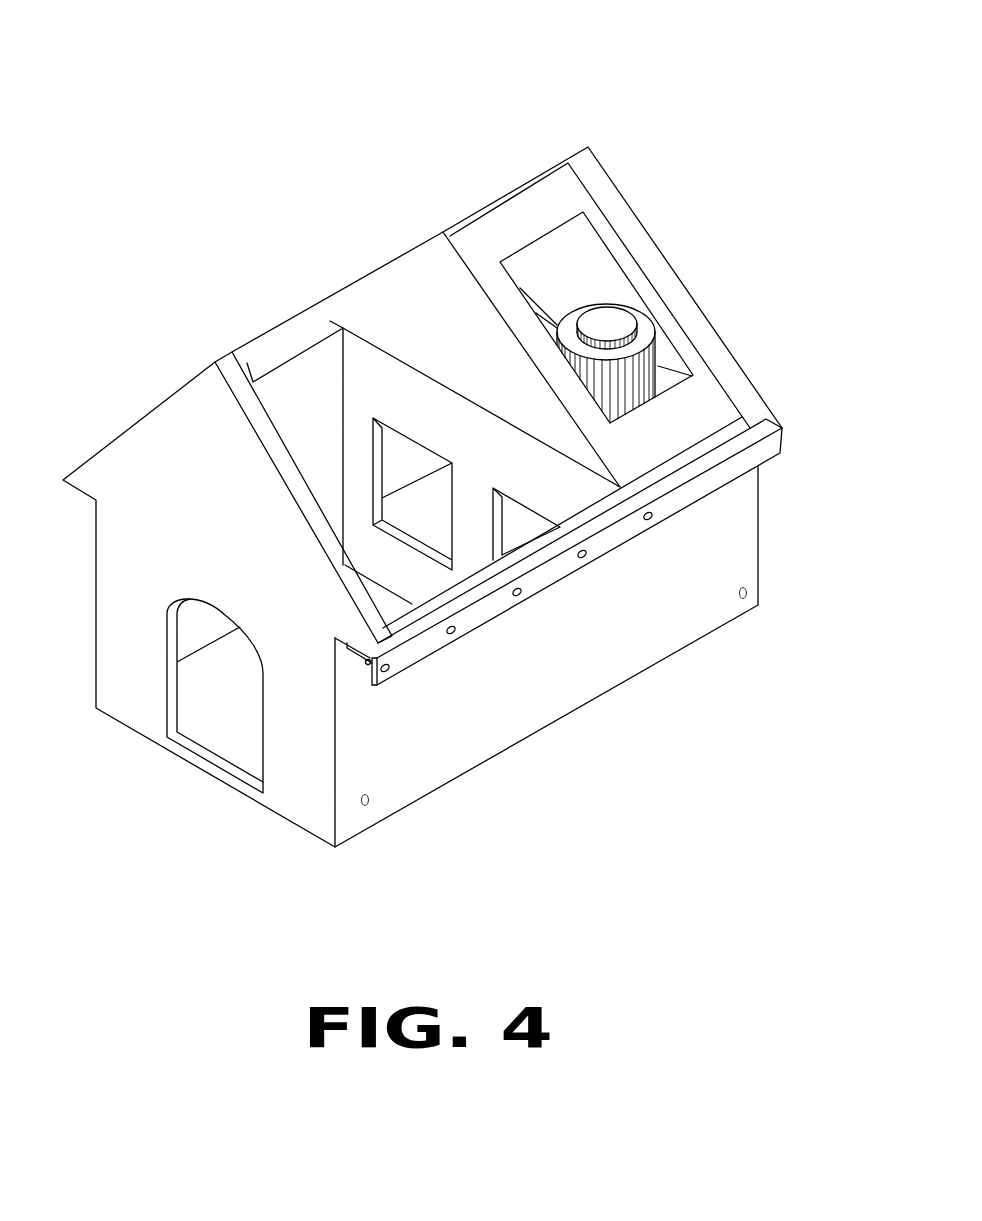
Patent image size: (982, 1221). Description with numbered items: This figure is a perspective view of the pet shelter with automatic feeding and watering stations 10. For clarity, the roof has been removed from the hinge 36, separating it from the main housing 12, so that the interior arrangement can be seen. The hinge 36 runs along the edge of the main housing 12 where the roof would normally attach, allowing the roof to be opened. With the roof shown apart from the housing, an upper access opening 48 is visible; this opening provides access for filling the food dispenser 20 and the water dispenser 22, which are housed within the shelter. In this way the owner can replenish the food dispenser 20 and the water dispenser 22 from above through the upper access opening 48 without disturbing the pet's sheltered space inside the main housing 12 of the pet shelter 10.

The pet shelter with automatic feeding and watering stations 10 is at (725, 93).
The main housing 12 is at (293, 742).
The food dispenser 20 is at (540, 307).
The water dispenser 22 is at (625, 322).
The hinge 36 is at (555, 572).
The upper access opening 48 is at (660, 333).